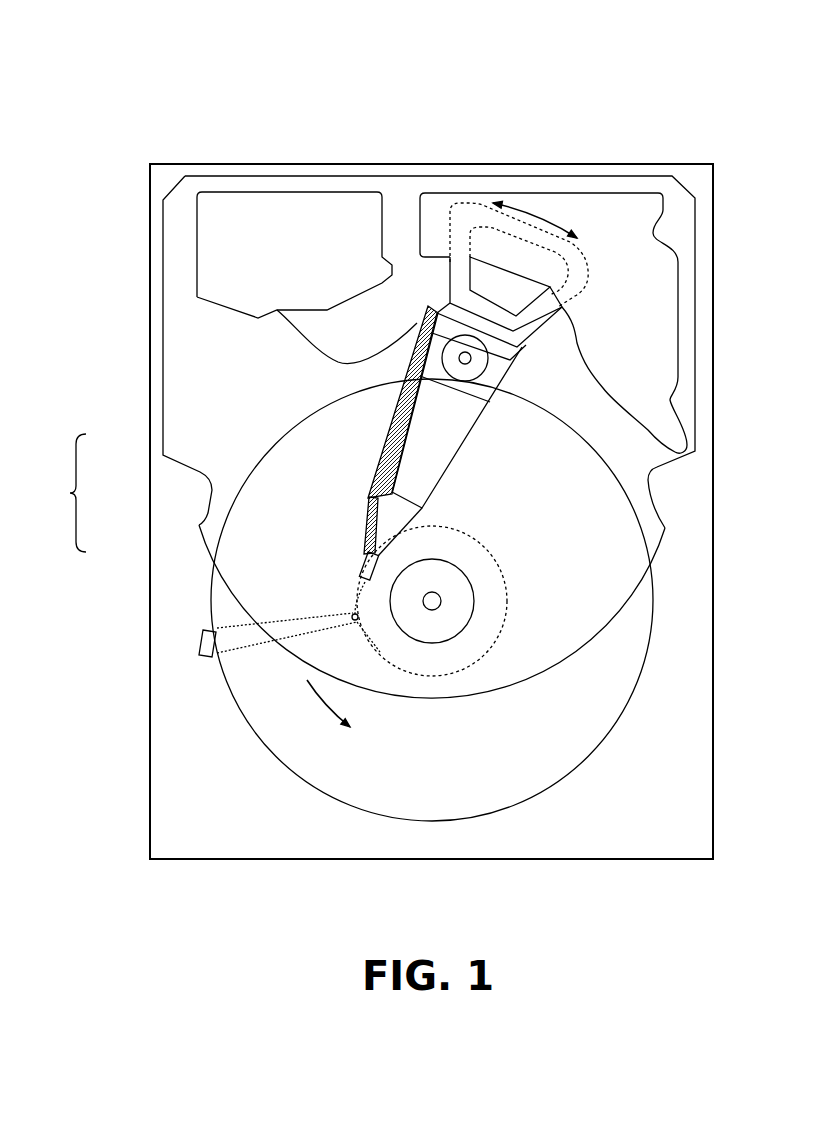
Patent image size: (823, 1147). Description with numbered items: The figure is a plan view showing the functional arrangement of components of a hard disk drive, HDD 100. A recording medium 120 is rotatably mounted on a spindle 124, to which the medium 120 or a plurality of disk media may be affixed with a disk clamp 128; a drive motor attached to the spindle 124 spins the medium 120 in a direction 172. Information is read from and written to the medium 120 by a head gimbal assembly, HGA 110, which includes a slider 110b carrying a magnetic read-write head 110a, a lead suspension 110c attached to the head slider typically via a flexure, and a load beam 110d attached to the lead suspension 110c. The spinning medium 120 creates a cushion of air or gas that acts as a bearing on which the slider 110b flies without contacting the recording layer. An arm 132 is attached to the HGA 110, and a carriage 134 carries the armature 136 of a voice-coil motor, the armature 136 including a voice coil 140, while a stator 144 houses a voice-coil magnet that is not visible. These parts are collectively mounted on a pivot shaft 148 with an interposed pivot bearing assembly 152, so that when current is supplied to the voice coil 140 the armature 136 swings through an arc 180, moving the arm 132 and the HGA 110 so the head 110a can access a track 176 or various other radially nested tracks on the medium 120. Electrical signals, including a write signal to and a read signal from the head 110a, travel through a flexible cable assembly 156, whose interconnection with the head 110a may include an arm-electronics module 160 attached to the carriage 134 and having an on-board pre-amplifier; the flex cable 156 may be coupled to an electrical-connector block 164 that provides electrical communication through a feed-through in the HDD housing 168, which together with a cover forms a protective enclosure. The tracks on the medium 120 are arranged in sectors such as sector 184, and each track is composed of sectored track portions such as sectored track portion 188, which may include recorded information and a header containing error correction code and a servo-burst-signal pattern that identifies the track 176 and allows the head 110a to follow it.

The hard disk drive 100 is at (85, 62).
The head gimbal assembly 110 is at (206, 524).
The magnetic read-write head 110a is at (350, 577).
The slider 110b is at (370, 553).
The lead suspension 110c is at (362, 512).
The load beam 110d is at (360, 488).
The recording medium 120 is at (590, 555).
The spindle 124 is at (440, 598).
The disk clamp 128 is at (453, 615).
The arm 132 is at (425, 458).
The carriage 134 is at (480, 383).
The armature 136 is at (443, 275).
The voice coil 140 is at (453, 261).
The stator 144 is at (648, 274).
The pivot shaft 148 is at (471, 357).
The pivot bearing assembly 152 is at (505, 377).
The flexible cable assembly 156 is at (310, 338).
The arm-electronics module 160 is at (420, 325).
The electrical-connector block 164 is at (220, 252).
The HDD housing 168 is at (693, 174).
The direction 172 is at (337, 708).
The track 176 is at (495, 563).
The arc 180 is at (533, 210).
The sector 184 is at (200, 646).
The sectored track portion 188 is at (352, 613).